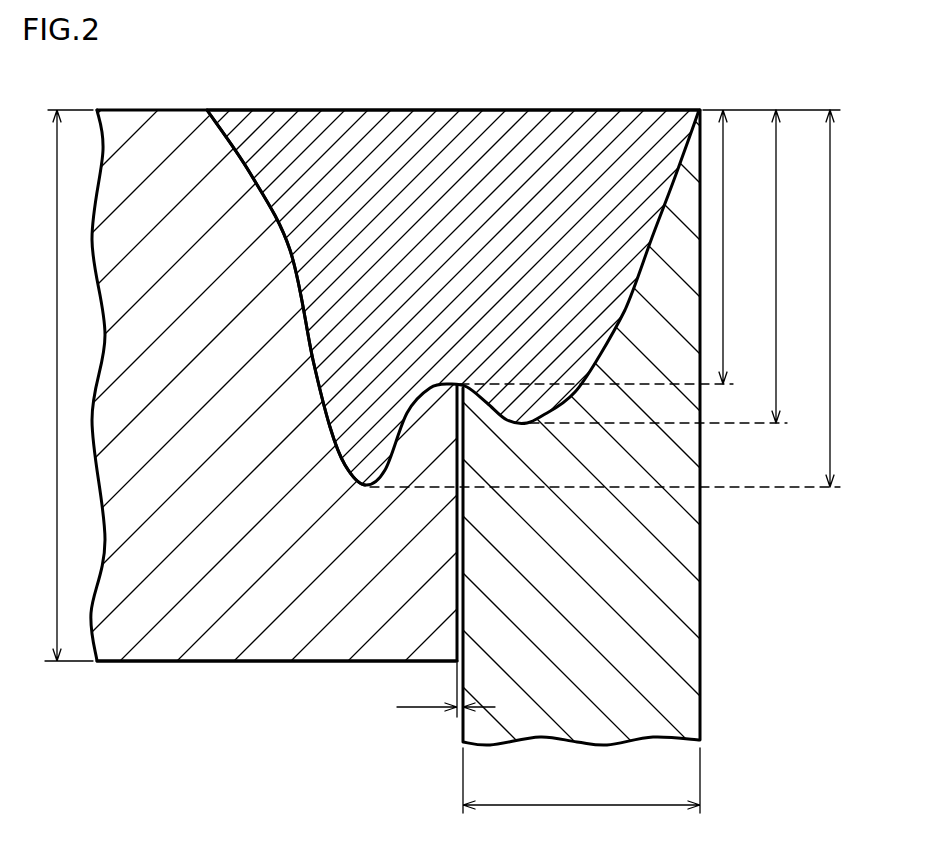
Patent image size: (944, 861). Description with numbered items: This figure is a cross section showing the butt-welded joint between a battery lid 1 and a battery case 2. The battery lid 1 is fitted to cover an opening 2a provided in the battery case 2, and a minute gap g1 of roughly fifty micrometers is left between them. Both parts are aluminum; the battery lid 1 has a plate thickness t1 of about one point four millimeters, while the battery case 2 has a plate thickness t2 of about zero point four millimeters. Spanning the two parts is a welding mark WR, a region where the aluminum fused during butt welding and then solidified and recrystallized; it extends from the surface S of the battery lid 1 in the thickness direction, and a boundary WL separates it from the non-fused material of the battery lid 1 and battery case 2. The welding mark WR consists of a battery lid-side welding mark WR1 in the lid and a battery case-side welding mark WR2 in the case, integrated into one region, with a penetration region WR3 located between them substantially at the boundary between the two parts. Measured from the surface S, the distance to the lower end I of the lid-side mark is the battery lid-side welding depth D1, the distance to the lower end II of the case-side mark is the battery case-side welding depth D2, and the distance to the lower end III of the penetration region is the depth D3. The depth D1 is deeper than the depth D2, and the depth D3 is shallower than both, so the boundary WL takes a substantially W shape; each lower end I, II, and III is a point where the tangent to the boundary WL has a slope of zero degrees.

The battery lid 1 is at (285, 625).
The battery case 2 is at (665, 588).
The opening 2a is at (193, 683).
The surface S is at (163, 110).
The welding mark WR is at (465, 143).
The battery lid-side welding mark WR1 is at (313, 150).
The battery case-side welding mark WR2 is at (607, 150).
The penetration region WR3 is at (435, 367).
The boundary WL is at (298, 336).
The lower end of battery lid-side welding mark I is at (363, 497).
The lower end of battery case-side welding mark II is at (525, 435).
The lower end of penetration region III is at (441, 396).
The plate thickness of battery lid t1 is at (61, 385).
The plate thickness of battery case t2 is at (581, 780).
The gap g1 is at (446, 690).
The battery lid-side welding depth D1 is at (617, 298).
The battery case-side welding depth D2 is at (671, 266).
The depth of penetration region D3 is at (650, 247).